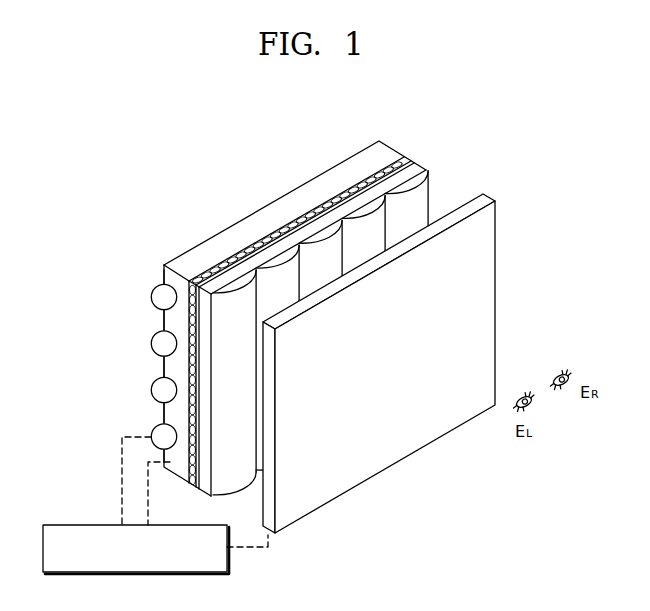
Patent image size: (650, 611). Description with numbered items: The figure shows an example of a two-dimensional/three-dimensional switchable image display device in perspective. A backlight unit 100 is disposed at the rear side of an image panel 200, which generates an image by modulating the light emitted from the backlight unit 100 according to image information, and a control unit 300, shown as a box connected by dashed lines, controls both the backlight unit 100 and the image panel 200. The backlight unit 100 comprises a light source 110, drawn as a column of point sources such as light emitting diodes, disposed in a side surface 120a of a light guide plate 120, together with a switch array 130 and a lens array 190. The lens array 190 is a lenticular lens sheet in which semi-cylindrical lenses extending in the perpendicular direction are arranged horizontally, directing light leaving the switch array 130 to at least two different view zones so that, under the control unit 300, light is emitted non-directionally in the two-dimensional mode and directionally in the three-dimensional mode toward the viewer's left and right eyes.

The backlight unit 100 is at (475, 100).
The light source 110 is at (152, 428).
The light guide plate 120 is at (394, 140).
The side surface of the light guide plate 120a is at (160, 275).
The switch array 130 is at (391, 168).
The lens array 190 is at (408, 203).
The image panel 200 is at (494, 199).
The control unit 300 is at (57, 525).